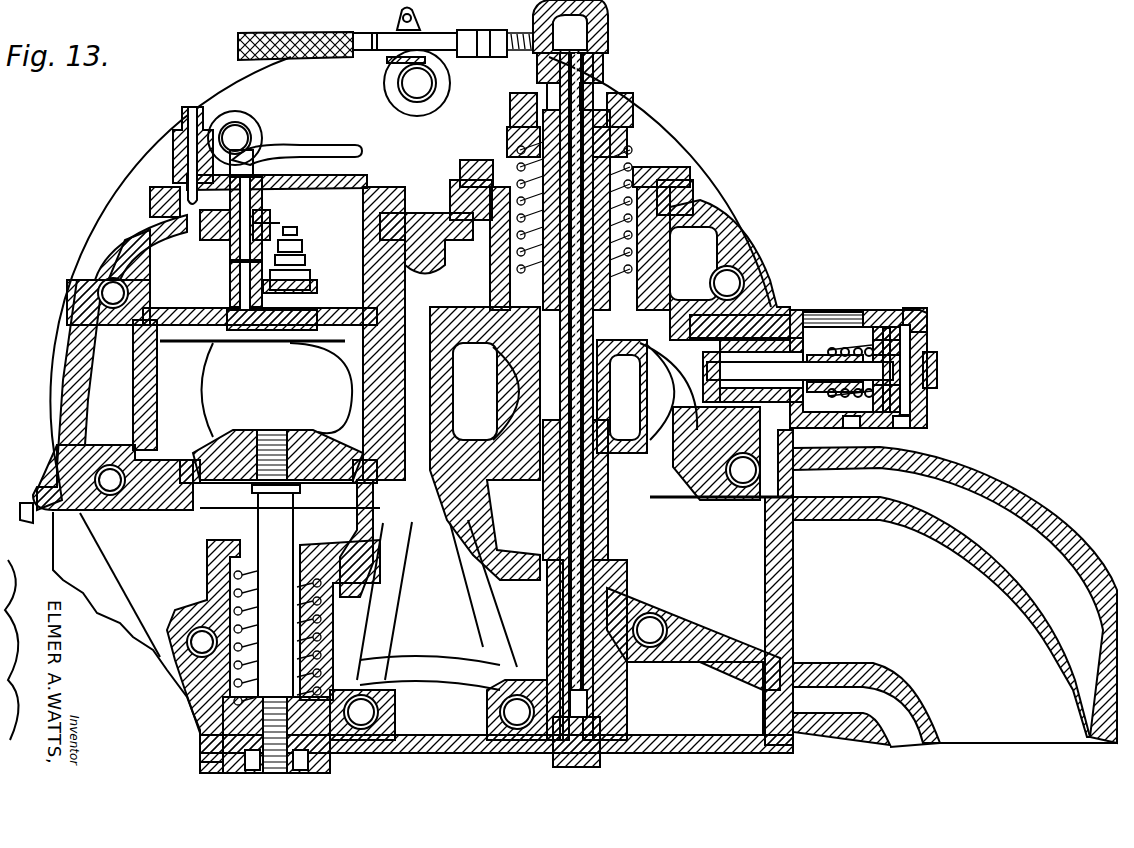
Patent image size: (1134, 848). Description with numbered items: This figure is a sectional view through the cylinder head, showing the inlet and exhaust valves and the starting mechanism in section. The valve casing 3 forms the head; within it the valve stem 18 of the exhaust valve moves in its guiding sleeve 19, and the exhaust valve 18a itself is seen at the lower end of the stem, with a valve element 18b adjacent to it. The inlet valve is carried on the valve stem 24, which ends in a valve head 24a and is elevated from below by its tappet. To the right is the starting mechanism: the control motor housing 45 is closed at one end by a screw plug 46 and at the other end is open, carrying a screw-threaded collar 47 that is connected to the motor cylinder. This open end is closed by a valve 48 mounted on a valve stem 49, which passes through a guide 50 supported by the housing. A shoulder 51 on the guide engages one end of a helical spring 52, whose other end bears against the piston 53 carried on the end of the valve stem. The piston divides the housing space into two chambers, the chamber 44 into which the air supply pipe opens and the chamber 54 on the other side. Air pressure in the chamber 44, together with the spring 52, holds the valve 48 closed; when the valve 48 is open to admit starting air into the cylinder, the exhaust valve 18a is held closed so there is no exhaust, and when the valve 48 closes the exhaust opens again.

The valve casing 3 is at (428, 755).
The valve stem 18 is at (610, 723).
The exhaust valve 18a is at (673, 428).
The valve 18b is at (593, 370).
The guiding sleeve 19 is at (610, 710).
The valve stem 24 is at (226, 737).
The valve disc 24a is at (313, 443).
The chamber 44 is at (793, 312).
The control motor housing 45 is at (897, 313).
The screw plug 46 is at (920, 313).
The screw-threaded collar 47 is at (750, 338).
The valve 48 is at (707, 362).
The valve stem 49 is at (787, 372).
The guide 50 is at (807, 355).
The shoulder 51 is at (823, 355).
The helical spring 52 is at (853, 355).
The piston 53 is at (890, 338).
The chamber 54 is at (907, 368).